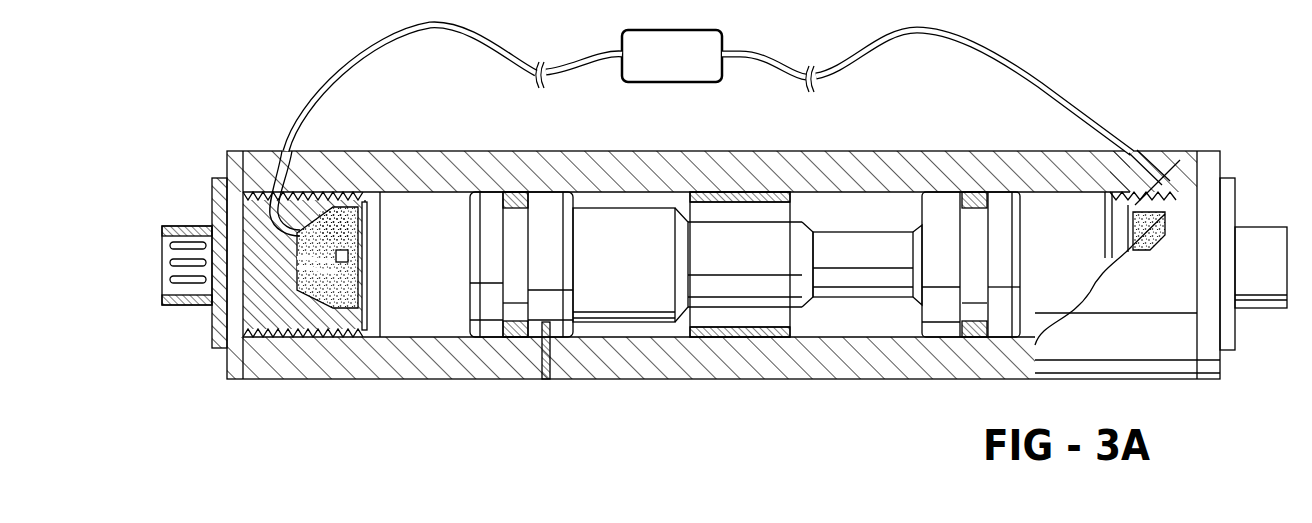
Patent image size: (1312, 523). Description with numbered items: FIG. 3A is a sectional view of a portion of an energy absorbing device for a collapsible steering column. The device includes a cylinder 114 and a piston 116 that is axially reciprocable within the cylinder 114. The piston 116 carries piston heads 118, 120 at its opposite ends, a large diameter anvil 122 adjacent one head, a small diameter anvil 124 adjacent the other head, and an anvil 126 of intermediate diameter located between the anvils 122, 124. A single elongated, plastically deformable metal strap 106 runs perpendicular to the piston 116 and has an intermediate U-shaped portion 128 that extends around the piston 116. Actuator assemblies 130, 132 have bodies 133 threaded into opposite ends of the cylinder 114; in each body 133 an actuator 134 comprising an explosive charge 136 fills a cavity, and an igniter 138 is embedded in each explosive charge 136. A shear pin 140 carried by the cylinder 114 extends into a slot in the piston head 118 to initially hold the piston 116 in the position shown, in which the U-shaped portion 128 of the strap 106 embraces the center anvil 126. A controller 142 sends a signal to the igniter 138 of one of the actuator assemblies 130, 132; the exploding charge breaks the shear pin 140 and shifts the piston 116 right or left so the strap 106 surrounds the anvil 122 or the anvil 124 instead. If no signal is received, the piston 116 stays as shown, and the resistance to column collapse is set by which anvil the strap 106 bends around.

The strap 106 is at (733, 190).
The cylinder 114 is at (508, 150).
The piston 116 is at (462, 309).
The piston head 118 is at (487, 338).
The piston head 120 is at (947, 340).
The large diameter anvil 122 is at (622, 320).
The small diameter anvil 124 is at (867, 299).
The anvil of intermediate diameter 126 is at (723, 307).
The U-shaped portion 128 is at (750, 335).
The actuator assembly 130 is at (195, 217).
The actuator assembly 132 is at (1229, 165).
The body 133 is at (255, 333).
The actuator 134 is at (331, 210).
The explosive charge 136 is at (312, 293).
The igniter 138 is at (360, 300).
The shear pin 140 is at (544, 382).
The controller 142 is at (682, 83).